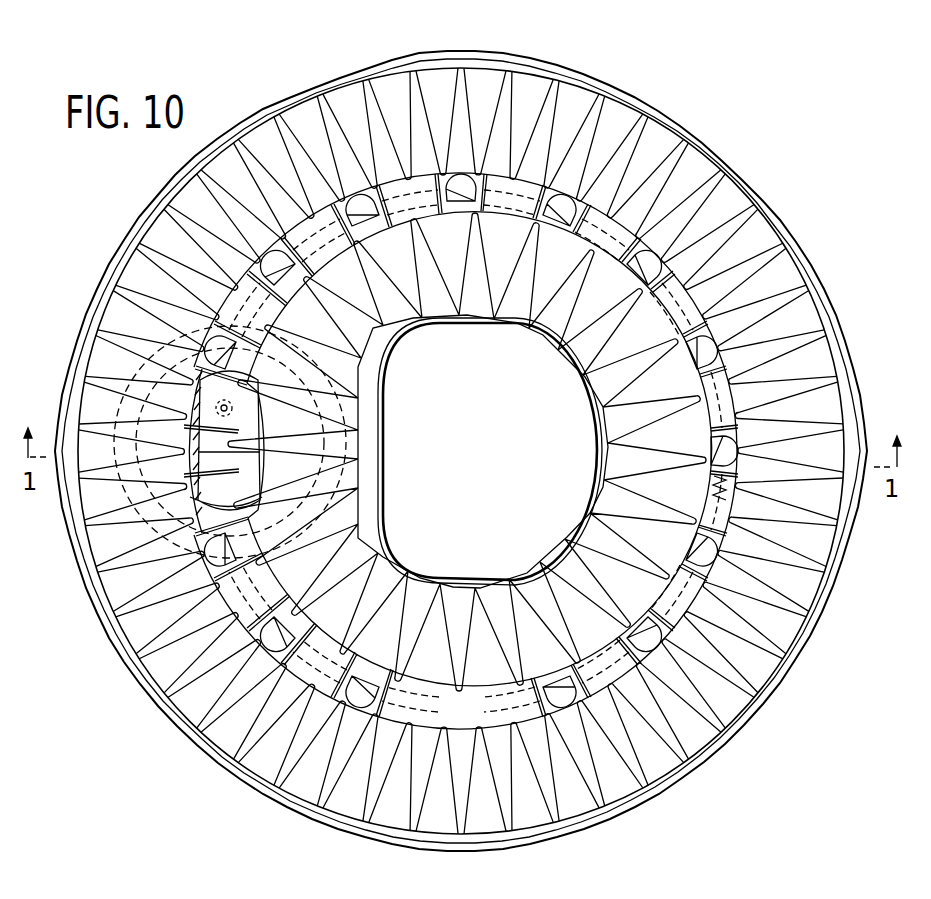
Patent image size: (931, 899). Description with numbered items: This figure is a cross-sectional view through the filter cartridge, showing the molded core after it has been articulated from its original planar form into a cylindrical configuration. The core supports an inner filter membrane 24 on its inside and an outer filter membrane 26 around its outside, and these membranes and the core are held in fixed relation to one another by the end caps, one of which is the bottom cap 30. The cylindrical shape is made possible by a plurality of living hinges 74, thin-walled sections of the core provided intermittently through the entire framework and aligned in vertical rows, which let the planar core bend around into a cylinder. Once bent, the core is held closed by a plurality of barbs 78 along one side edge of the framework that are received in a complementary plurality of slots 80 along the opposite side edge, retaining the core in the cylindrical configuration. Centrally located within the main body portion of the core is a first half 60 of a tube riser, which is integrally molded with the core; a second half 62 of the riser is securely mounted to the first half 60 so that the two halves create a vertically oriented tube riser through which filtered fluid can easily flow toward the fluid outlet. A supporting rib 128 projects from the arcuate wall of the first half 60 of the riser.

The inner filter membrane 24 is at (624, 386).
The outer filter membrane 26 is at (713, 184).
The bottom cap 30 is at (597, 462).
The first half of tube riser 60 is at (199, 470).
The second half of tube riser 62 is at (268, 500).
The living hinges 74 is at (352, 198).
The barbs 78 is at (714, 484).
The slots 80 is at (748, 485).
The supporting rib 128 is at (270, 402).